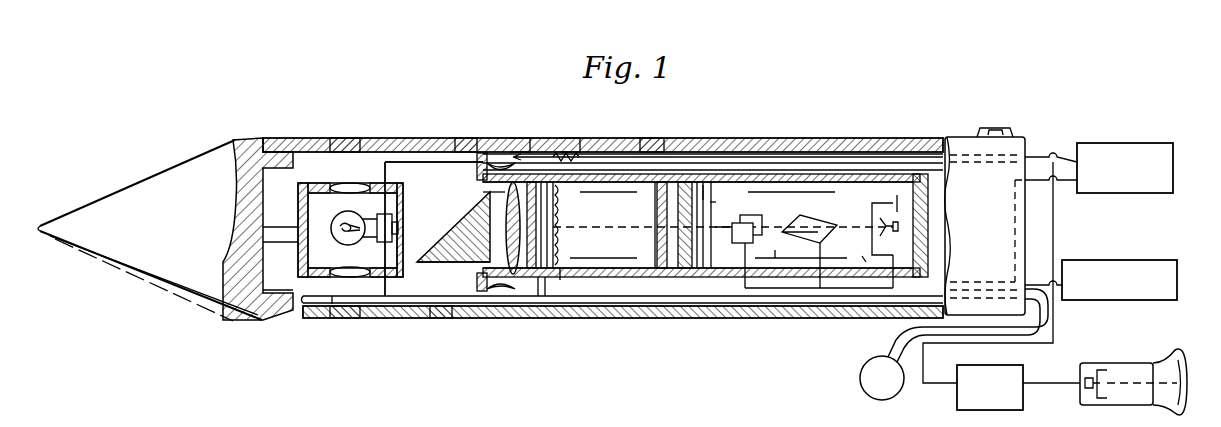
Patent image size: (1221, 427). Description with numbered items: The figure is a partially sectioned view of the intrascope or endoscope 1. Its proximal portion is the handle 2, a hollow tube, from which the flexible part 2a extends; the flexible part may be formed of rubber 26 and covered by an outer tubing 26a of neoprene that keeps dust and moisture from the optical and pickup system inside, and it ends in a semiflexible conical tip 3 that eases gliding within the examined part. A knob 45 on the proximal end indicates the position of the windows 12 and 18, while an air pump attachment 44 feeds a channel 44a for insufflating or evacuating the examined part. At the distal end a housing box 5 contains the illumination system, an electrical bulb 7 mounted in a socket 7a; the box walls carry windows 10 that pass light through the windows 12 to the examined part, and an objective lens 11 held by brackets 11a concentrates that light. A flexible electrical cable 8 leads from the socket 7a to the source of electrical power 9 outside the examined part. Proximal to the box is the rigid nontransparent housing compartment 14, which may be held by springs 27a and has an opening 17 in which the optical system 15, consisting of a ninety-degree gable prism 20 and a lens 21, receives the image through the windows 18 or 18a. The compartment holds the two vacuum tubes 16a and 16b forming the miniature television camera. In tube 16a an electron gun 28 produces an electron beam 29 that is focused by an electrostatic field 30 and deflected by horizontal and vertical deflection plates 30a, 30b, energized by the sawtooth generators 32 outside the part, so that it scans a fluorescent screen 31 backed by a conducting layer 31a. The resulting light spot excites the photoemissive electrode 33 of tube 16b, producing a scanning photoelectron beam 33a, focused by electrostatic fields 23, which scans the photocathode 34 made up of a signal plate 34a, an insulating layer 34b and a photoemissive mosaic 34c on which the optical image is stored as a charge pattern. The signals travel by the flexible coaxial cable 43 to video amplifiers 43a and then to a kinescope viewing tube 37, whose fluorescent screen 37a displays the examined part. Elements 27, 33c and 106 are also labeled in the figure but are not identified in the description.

The intrascope 1 is at (568, 138).
The handle 2 is at (945, 138).
The flexible part 2a is at (520, 139).
The semiflexible tip 3 is at (151, 176).
The housing box 5 is at (378, 186).
The electrical bulb 7 is at (345, 213).
The socket 7a is at (398, 230).
The flexible electrical cable 8 is at (447, 161).
The source of electrical power 9 is at (1118, 195).
The windows 10 is at (336, 186).
The objective lens 11 is at (348, 278).
The brackets 11a is at (327, 276).
The windows 12 is at (342, 139).
The housing compartment 14 is at (827, 175).
The optical system 15 is at (490, 195).
The vacuum tube 16a is at (862, 262).
The vacuum tube 16b is at (625, 258).
The opening 17 is at (508, 226).
The windows 18 is at (443, 318).
The window 18a is at (468, 138).
The gable prism 20 is at (463, 248).
The lens 21 is at (462, 264).
The electrostatic focusing field 23 is at (578, 258).
The rubber 26 is at (703, 185).
The outer tubing 26a is at (650, 139).
The lens holder 27 is at (478, 170).
The springs 27a is at (503, 296).
The electron gun 28 is at (897, 210).
The electron beam 29 is at (858, 226).
The electrostatic field 30 is at (806, 259).
The horizontal deflection plates 30a is at (758, 208).
The vertical deflection plates 30b is at (814, 218).
The fluorescent screen 31 is at (710, 202).
The conducting backing layer 31a is at (740, 183).
The sawtooth generators 32 is at (1122, 260).
The photoemissive electrode 33 is at (655, 274).
The photoelectron beam 33a is at (603, 227).
The partition 33c is at (670, 274).
The photocathode 34 is at (548, 278).
The signal plate 34a is at (538, 278).
The insulating layer 34b is at (556, 278).
The photoemissive mosaic 34c is at (560, 272).
The viewing tube 37 is at (1100, 405).
The fluorescent screen 37a is at (1180, 405).
The coaxial cable 43 is at (600, 157).
The video amplifiers 43a is at (1010, 368).
The air pump attachment 44 is at (868, 394).
The channel 44a is at (332, 304).
The knob 45 is at (995, 128).
The end cap 106 is at (950, 188).